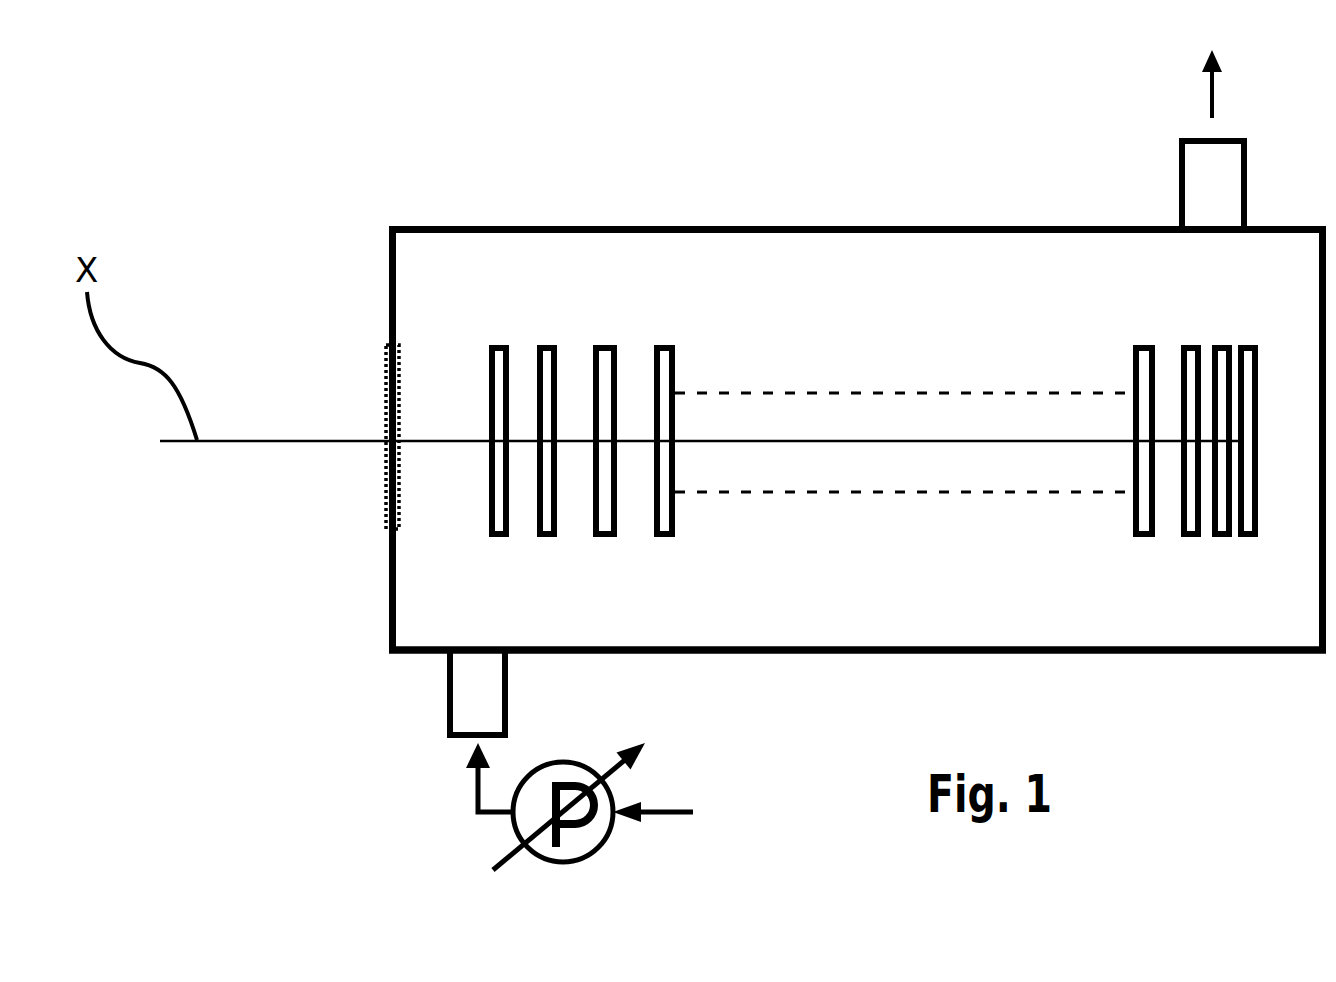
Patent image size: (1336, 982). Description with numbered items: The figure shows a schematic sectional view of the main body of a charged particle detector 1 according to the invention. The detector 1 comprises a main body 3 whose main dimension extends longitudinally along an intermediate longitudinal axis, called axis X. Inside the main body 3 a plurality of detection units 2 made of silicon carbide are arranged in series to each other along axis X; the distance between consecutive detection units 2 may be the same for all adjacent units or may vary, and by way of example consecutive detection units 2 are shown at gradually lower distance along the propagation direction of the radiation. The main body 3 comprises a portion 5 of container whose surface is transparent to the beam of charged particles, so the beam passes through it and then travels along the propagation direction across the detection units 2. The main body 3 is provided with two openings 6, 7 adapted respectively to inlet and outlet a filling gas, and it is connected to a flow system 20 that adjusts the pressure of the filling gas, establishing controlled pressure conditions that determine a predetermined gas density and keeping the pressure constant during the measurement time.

The detector 1 is at (288, 534).
The detection units 2 is at (489, 357).
The main body 3 is at (873, 257).
The portion of container 5 is at (383, 393).
The opening 6 is at (473, 678).
The opening 7 is at (1225, 186).
The flow system 20 is at (612, 795).